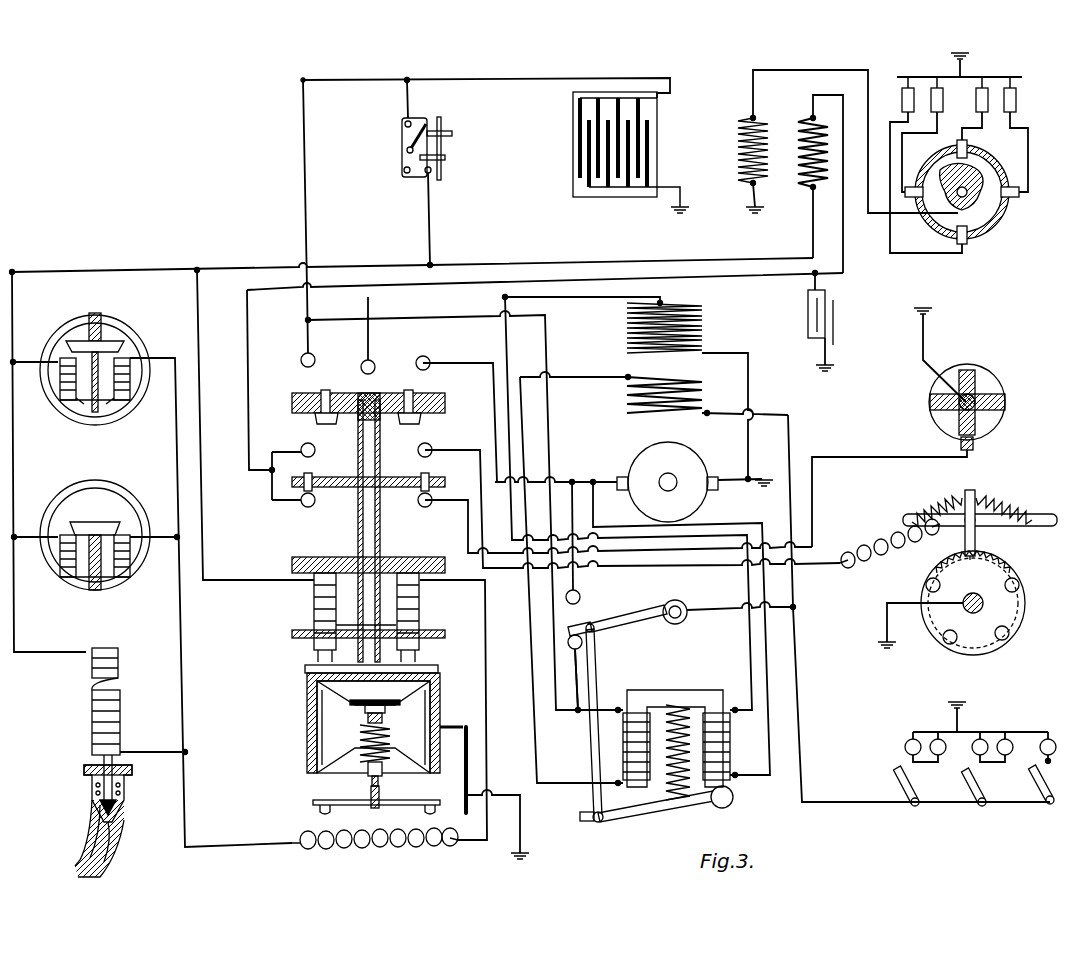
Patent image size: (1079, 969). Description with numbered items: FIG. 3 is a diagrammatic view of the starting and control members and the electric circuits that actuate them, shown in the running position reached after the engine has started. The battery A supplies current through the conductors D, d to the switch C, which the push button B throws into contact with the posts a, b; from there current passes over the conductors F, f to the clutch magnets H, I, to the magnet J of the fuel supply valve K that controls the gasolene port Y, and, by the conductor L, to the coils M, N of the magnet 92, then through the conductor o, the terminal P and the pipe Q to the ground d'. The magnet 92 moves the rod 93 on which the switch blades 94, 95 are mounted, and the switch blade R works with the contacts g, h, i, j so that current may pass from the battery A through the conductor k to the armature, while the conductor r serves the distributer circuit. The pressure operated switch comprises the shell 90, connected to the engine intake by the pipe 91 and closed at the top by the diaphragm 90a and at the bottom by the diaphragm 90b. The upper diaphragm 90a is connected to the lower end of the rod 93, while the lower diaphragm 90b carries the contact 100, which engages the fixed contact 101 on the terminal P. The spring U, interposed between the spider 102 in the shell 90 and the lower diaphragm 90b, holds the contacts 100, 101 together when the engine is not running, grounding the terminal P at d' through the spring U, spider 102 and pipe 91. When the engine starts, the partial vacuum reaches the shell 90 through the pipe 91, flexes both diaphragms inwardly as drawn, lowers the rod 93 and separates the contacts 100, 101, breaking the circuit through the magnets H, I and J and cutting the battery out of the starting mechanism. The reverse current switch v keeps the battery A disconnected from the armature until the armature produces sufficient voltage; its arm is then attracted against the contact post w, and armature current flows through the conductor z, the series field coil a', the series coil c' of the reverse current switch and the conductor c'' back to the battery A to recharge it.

The conductor D is at (530, 85).
The conductor d is at (397, 98).
The post a is at (427, 105).
The switch C is at (403, 150).
The push button B is at (453, 134).
The post b is at (426, 174).
The conductor f is at (432, 212).
The conductor F is at (365, 269).
The conductor k is at (306, 196).
The battery A is at (573, 137).
The ground connection d' is at (770, 453).
The series field coil a' is at (667, 412).
The clutch magnet H is at (125, 382).
The clutch magnet I is at (128, 560).
The conductor L is at (201, 435).
The conductor r is at (250, 395).
The contact g is at (316, 363).
The contact h is at (376, 364).
The contact i is at (430, 360).
The contact j is at (313, 446).
The switch blade R is at (447, 393).
The switch blade 95 is at (438, 414).
The switch blade 94 is at (384, 484).
The rod 93 is at (382, 528).
The magnet 92 is at (425, 558).
The coil M is at (312, 612).
The coil N is at (432, 603).
The conductor o is at (489, 668).
The shell 90 is at (320, 718).
The upper diaphragm 90a is at (307, 700).
The spring U is at (352, 758).
The spider 102 is at (352, 740).
The lower diaphragm 90b is at (370, 776).
The contact 100 is at (366, 806).
The fixed contact 101 is at (372, 815).
The pipe 91 is at (457, 724).
The pipe Q is at (470, 772).
The terminal P is at (366, 836).
The magnet J is at (122, 716).
The fuel supply valve K is at (92, 790).
The gasolene port Y is at (96, 812).
The conductor z is at (578, 548).
The contact post w is at (581, 598).
The reverse current switch v is at (634, 622).
The series coil c' is at (668, 749).
The conductor c'' is at (600, 679).